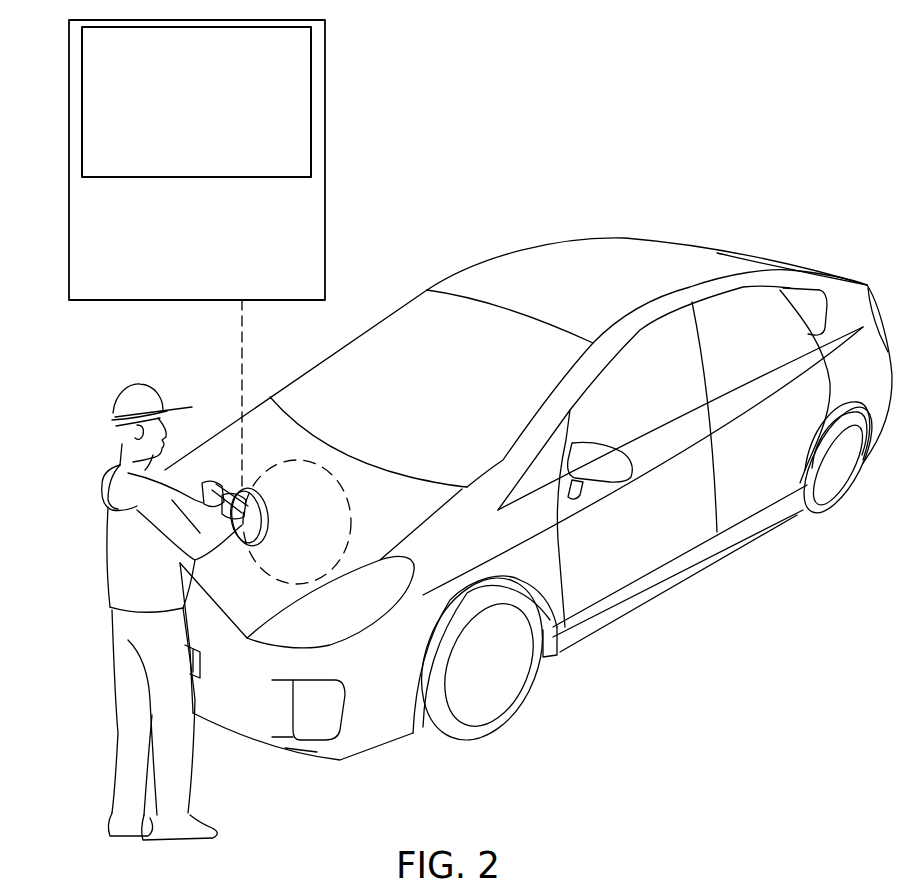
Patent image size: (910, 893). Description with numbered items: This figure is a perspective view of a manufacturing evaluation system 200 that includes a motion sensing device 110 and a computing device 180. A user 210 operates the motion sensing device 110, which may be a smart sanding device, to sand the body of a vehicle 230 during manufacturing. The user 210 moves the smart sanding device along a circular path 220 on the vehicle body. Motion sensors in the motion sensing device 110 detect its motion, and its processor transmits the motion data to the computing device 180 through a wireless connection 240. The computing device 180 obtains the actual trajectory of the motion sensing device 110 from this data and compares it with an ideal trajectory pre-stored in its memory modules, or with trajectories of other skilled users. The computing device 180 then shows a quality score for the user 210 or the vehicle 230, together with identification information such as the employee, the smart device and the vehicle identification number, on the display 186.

The motion sensing device 110 is at (268, 512).
The computing device 180 is at (325, 100).
The display 186 is at (311, 153).
The manufacturing evaluation system 200 is at (660, 192).
The user 210 is at (108, 548).
The circular path 220 is at (350, 517).
The vehicle 230 is at (517, 250).
The wireless connection 240 is at (241, 362).